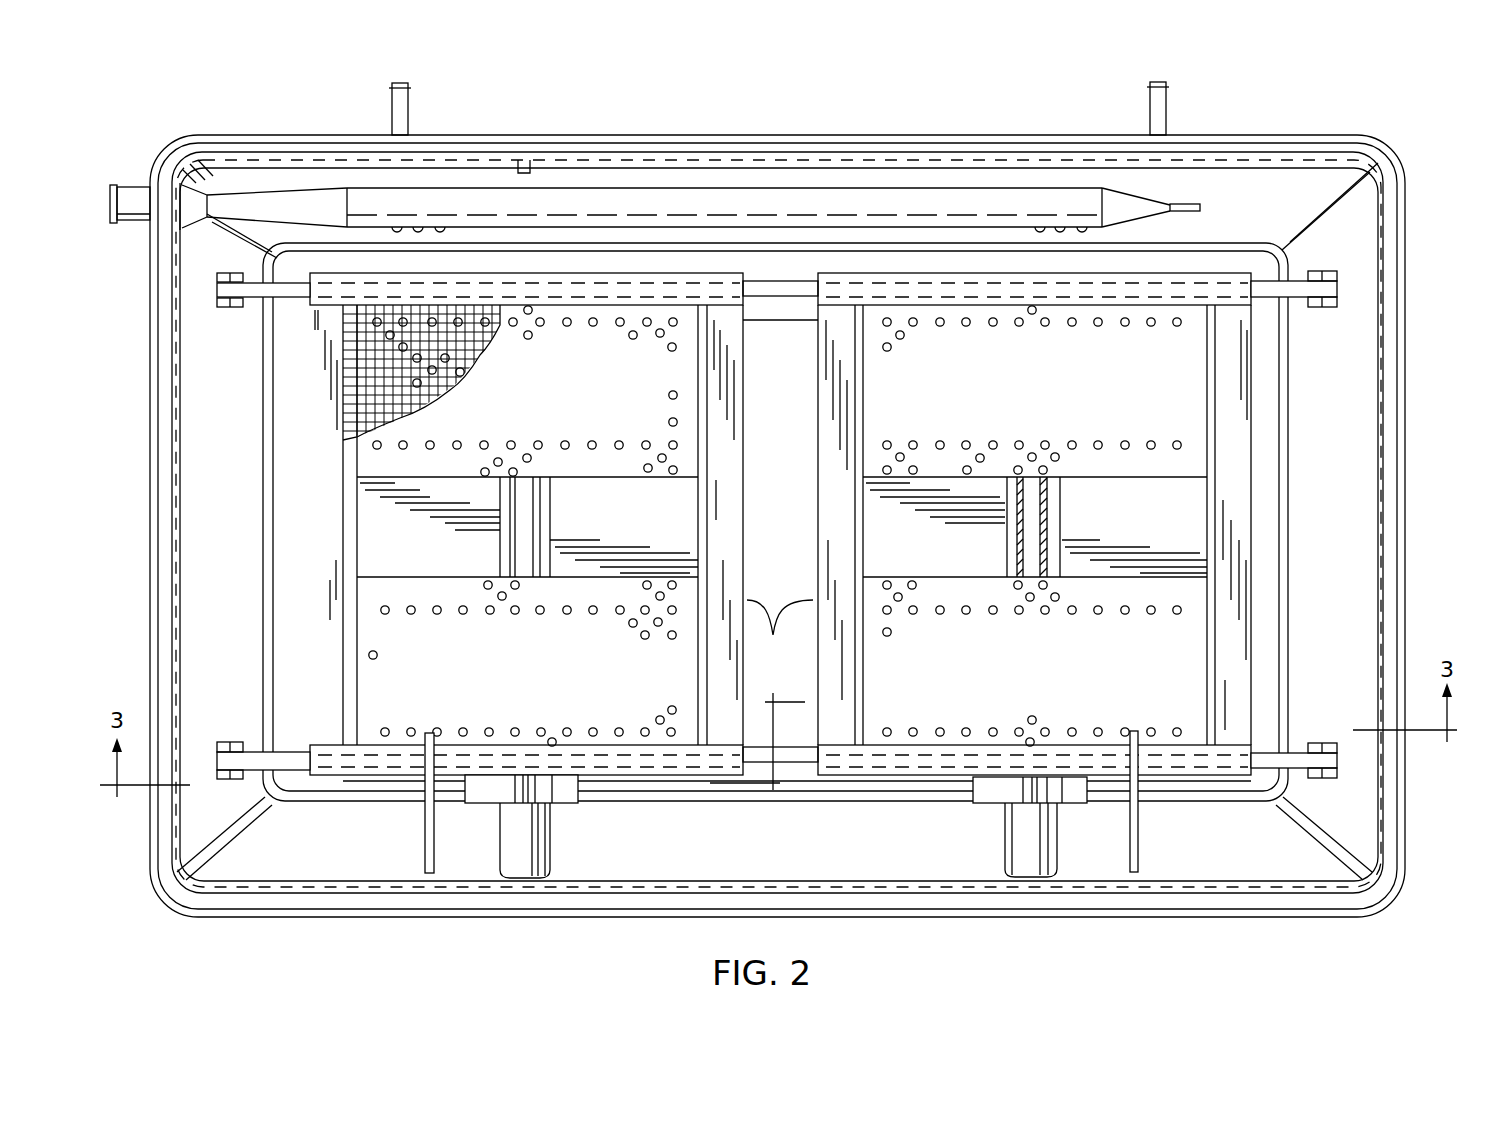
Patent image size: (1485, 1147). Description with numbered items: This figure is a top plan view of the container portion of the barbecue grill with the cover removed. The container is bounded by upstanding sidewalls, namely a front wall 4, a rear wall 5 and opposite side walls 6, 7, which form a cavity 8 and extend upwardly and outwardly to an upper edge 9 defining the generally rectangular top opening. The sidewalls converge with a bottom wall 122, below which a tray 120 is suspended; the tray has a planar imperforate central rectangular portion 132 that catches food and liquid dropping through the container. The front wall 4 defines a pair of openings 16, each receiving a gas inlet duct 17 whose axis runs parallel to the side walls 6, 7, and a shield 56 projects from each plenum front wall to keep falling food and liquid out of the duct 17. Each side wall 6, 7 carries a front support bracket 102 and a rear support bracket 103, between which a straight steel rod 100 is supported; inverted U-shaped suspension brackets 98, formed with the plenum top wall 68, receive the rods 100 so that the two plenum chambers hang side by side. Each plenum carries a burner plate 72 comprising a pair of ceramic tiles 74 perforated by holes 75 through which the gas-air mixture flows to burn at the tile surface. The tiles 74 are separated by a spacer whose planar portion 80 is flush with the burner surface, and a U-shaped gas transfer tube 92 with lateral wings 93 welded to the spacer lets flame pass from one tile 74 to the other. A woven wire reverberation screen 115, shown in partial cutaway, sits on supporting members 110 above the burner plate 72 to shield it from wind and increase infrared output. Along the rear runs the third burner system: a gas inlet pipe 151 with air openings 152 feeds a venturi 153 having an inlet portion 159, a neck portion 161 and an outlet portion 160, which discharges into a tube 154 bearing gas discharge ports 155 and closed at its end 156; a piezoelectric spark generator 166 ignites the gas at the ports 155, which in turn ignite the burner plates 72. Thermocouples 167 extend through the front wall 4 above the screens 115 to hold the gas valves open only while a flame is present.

The front wall 4 is at (936, 918).
The rear wall 5 is at (805, 135).
The side wall 6 is at (1406, 516).
The side wall 7 is at (150, 437).
The cavity 8 is at (218, 514).
The upper edge 9 is at (1334, 918).
The openings 16 is at (508, 878).
The gas inlet duct 17 is at (518, 845).
The shield 56 is at (570, 805).
The top wall 68 is at (884, 762).
The burner plate 72 is at (1187, 405).
The tile 74 is at (1092, 394).
The holes 75 is at (567, 327).
The planar portion 80 is at (682, 528).
The gas transfer tube 92 is at (555, 508).
The lateral wings 93 is at (547, 563).
The suspension bracket 98 is at (1217, 272).
The rod 100 is at (1298, 262).
The front support bracket 102 is at (233, 782).
The rear support bracket 103 is at (1310, 270).
The support frame 110 is at (325, 572).
The reverberation screen 115 is at (478, 345).
The tray 120 is at (295, 415).
The bottom wall 122 is at (797, 322).
The central rectangular portion 132 is at (803, 433).
The gas inlet pipe 151 is at (113, 226).
The air openings 152 is at (132, 187).
The venturi 153 is at (328, 186).
The tube 154 is at (655, 186).
The gas discharge ports 155 is at (418, 224).
The closed end 156 is at (1200, 207).
The inlet portion 159 is at (197, 187).
The outlet portion 160 is at (268, 196).
The neck portion 161 is at (207, 220).
The piezoelectric spark generator 166 is at (530, 163).
The thermocouple 167 is at (423, 855).